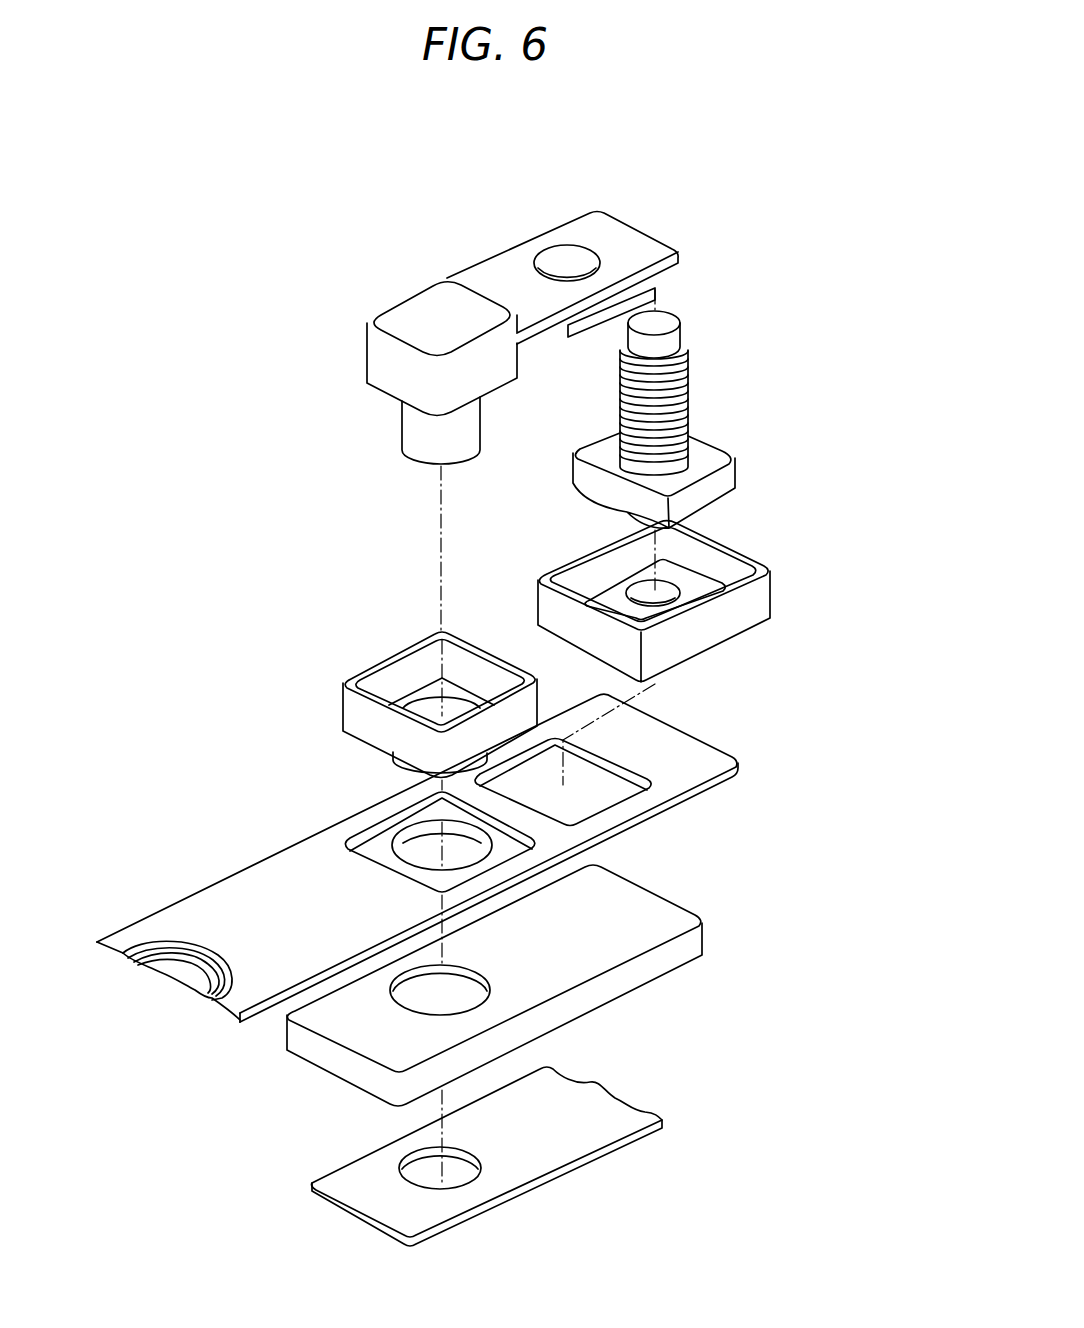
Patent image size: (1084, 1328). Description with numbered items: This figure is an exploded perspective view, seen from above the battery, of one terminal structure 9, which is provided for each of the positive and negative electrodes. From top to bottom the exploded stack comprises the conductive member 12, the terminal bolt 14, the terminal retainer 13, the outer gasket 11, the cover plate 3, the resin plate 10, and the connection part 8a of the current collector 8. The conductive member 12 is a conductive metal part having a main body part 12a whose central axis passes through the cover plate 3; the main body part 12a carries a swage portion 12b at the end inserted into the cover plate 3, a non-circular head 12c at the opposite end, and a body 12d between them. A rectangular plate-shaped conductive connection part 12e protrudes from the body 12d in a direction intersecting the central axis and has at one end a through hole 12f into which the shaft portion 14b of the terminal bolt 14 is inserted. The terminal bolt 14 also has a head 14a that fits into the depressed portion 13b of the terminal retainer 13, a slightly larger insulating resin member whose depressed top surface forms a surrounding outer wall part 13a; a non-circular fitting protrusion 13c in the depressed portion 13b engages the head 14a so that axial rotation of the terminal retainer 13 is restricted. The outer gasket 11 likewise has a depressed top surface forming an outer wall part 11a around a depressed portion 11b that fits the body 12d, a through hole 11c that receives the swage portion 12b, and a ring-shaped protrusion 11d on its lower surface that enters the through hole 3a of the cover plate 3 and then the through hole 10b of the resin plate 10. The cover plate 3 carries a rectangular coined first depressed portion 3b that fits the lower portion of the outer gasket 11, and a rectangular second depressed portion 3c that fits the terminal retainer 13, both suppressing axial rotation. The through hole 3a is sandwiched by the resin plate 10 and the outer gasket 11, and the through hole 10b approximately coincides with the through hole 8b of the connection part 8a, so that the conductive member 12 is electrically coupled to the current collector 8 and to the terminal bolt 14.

The terminal structure 9 is at (314, 176).
The conductive member 12 is at (429, 309).
The main body part 12a is at (348, 373).
The swage portion 12b is at (428, 437).
The head 12c is at (408, 318).
The body 12d is at (392, 366).
The conductive connection part 12e is at (547, 249).
The through hole 12f is at (565, 255).
The terminal bolt 14 is at (719, 419).
The head 14a is at (697, 465).
The shaft portion 14b is at (688, 405).
The terminal retainer 13 is at (717, 601).
The outer wall part 13a is at (757, 600).
The depressed portion 13b is at (722, 565).
The fitting protrusion 13c is at (686, 602).
The outer gasket 11 is at (361, 683).
The outer wall part 11a is at (363, 715).
The depressed portion 11b is at (373, 685).
The through hole 11c is at (425, 708).
The ring-shaped protrusion 11d is at (417, 767).
The cover plate 3 is at (200, 910).
The through hole 3a is at (403, 838).
The first depressed portion 3b is at (367, 843).
The second depressed portion 3c is at (592, 793).
The resin plate 10 is at (615, 982).
The through hole 10b is at (430, 1016).
The current collector 8 is at (504, 1169).
The connection part 8a is at (558, 1138).
The through hole 8b is at (458, 1180).